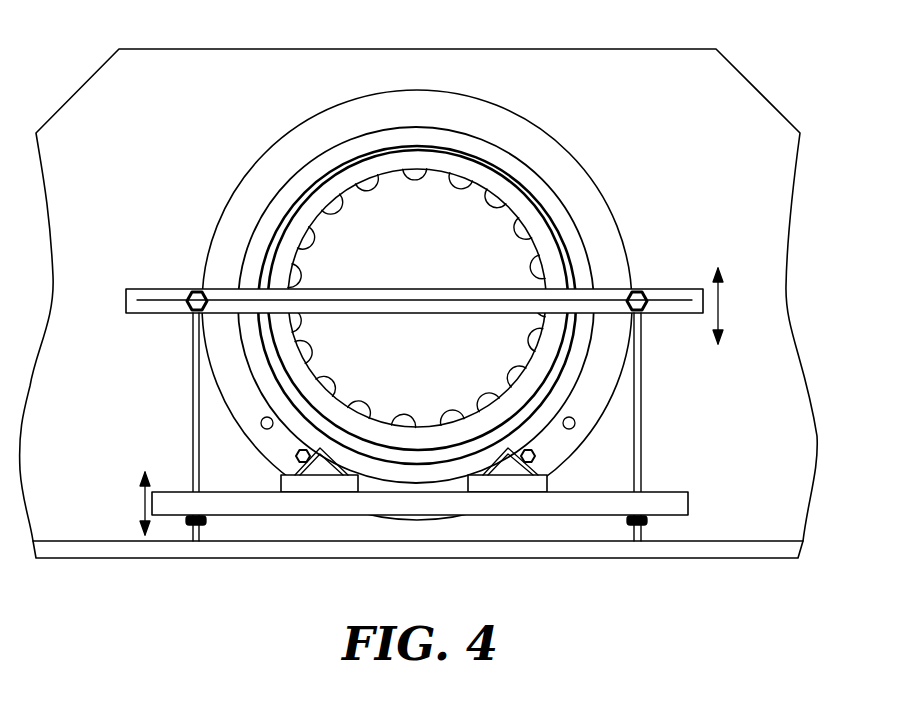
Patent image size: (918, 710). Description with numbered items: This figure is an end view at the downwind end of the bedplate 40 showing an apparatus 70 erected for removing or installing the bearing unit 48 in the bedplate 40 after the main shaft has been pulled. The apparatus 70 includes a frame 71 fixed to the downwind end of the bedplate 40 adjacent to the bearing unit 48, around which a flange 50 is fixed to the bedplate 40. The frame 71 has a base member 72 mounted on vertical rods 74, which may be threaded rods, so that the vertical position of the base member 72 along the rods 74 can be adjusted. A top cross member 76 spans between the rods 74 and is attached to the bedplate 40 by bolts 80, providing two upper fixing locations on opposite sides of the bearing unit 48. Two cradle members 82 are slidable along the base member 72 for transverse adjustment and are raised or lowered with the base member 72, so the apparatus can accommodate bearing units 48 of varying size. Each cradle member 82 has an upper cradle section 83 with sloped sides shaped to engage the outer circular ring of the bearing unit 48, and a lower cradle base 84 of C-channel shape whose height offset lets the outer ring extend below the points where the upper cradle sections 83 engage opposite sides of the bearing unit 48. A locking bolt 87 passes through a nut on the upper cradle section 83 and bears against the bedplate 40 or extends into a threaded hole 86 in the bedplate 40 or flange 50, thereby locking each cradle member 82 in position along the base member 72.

The bedplate 40 is at (126, 92).
The bearing unit 48 is at (306, 163).
The flange 50 is at (554, 135).
The apparatus 70 is at (439, 375).
The frame 71 is at (188, 392).
The base member 72 is at (688, 500).
The vertical rods 74 is at (192, 452).
The top cross member 76 is at (481, 289).
The bolts 80 is at (197, 291).
The cradle members 82 is at (560, 482).
The upper cradle section 83 is at (490, 462).
The cradle base 84 is at (333, 493).
The threaded hole 86 is at (576, 423).
The bolt 87 is at (296, 457).